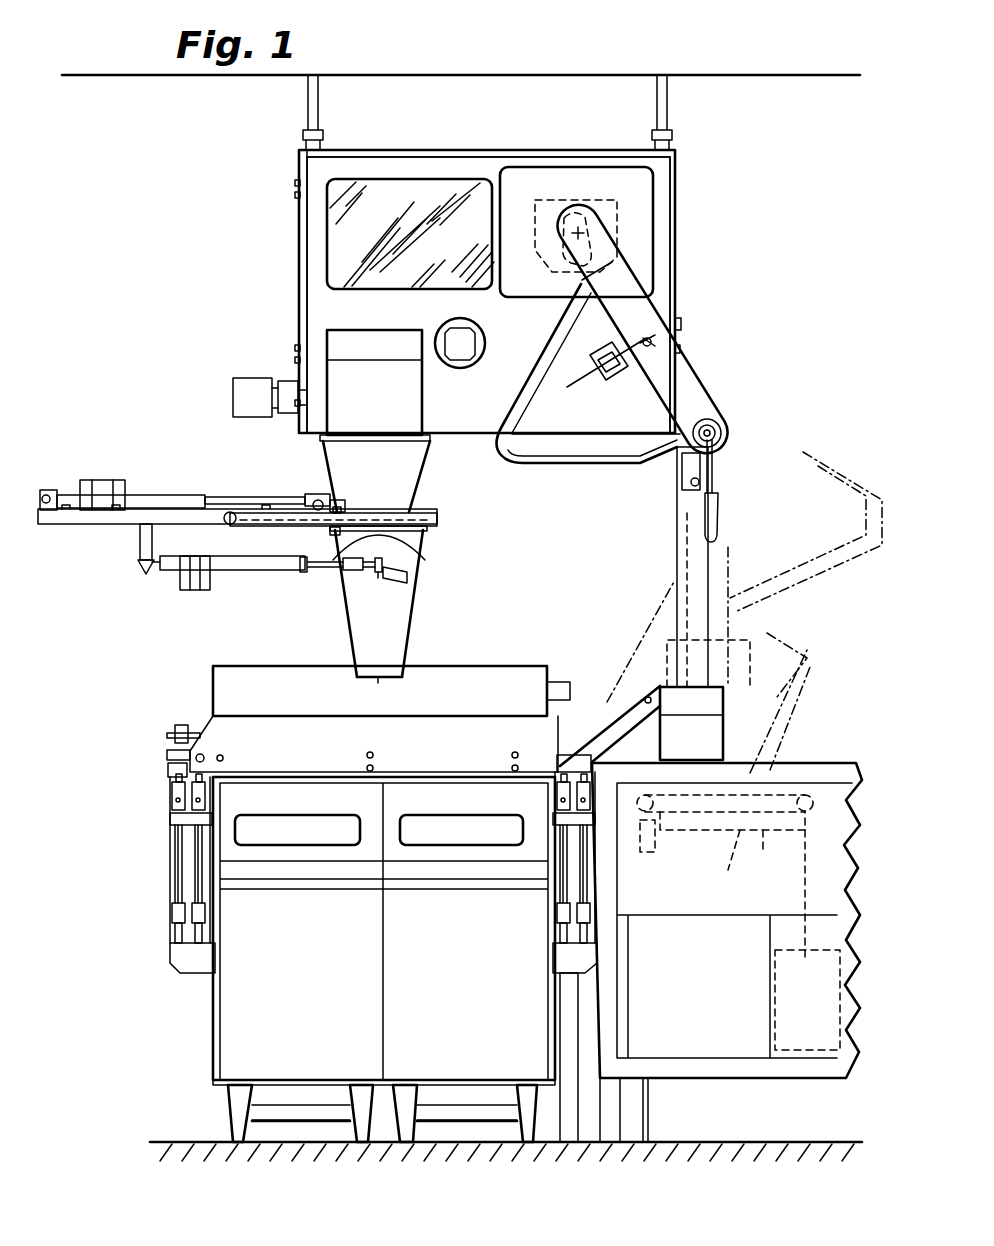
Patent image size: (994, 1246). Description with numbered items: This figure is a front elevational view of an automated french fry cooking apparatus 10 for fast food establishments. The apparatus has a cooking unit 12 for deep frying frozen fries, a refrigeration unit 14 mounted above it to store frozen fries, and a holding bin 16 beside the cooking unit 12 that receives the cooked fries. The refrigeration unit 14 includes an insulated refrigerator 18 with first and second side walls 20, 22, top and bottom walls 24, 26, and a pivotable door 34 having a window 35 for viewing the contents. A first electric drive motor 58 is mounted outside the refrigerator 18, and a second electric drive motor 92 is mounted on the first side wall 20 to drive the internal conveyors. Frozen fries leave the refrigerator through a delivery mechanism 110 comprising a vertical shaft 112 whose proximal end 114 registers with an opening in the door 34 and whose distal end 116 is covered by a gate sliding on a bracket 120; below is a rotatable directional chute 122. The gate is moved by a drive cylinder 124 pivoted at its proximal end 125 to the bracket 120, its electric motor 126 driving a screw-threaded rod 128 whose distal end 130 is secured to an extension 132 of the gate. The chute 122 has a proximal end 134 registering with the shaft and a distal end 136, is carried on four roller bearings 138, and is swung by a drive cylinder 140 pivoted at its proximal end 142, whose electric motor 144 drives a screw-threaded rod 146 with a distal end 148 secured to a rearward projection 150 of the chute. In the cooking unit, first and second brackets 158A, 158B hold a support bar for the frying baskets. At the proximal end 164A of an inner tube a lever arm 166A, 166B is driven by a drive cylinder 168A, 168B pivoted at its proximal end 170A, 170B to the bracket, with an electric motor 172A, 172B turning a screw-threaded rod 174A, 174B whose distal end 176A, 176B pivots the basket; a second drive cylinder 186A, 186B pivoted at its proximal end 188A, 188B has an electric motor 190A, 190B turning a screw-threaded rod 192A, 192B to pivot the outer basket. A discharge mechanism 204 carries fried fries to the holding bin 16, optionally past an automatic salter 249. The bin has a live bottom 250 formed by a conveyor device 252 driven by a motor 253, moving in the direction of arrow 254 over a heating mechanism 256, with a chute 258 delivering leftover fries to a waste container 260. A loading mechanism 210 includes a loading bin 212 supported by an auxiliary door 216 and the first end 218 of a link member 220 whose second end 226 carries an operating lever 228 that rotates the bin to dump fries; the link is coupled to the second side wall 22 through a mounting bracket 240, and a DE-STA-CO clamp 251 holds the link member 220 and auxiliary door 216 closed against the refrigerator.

The automated french fry cooking apparatus 10 is at (128, 375).
The cooking unit 12 is at (205, 715).
The refrigeration unit 14 is at (684, 212).
The holding bin 16 is at (838, 762).
The insulated refrigerator 18 is at (440, 165).
The first side wall 20 is at (298, 237).
The second side wall 22 is at (676, 228).
The top wall 24 is at (575, 160).
The bottom wall 26 is at (456, 436).
The pivotable door 34 is at (318, 300).
The window 35 is at (385, 190).
The first electric drive motor 58 is at (480, 340).
The second electric drive motor 92 is at (252, 382).
The delivery mechanism 110 is at (434, 540).
The vertical shaft 112 is at (330, 450).
The proximal end 114 is at (425, 395).
The distal end 116 is at (420, 525).
The bracket 120 is at (228, 522).
The rotatable directional chute 122 is at (415, 600).
The drive cylinder 124 is at (170, 497).
The proximal end 125 is at (50, 492).
The electric motor 126 is at (110, 482).
The screw-threaded rod 128 is at (235, 497).
The distal end 130 is at (318, 500).
The extension 132 is at (340, 505).
The proximal end 134 is at (440, 522).
The distal end 136 is at (400, 676).
The roller bearings 138 is at (320, 530).
The drive cylinder 140 is at (235, 570).
The proximal end 142 is at (150, 570).
The electric motor 144 is at (205, 585).
The screw-threaded rod 146 is at (320, 575).
The distal end 148 is at (378, 578).
The rearward projection 150 is at (407, 575).
The first bracket 158A is at (178, 805).
The second bracket 158B is at (565, 960).
The proximal end 164A is at (180, 728).
The lever arm 166A is at (190, 742).
The lever arm 166B is at (570, 775).
The drive cylinder 168A is at (178, 858).
The drive cylinder 168B is at (597, 890).
The proximal end 170A is at (178, 935).
The proximal end 170B is at (597, 935).
The electric motor 172A is at (178, 915).
The electric motor 172B is at (597, 915).
The screw-threaded rod 174A is at (178, 795).
The screw-threaded rod 174B is at (597, 800).
The distal end 176A is at (182, 765).
The distal end 176B is at (610, 740).
The drive cylinder 186A is at (240, 828).
The drive cylinder 186B is at (540, 838).
The proximal end 188A is at (205, 935).
The proximal end 188B is at (570, 935).
The electric motor 190A is at (205, 915).
The electric motor 190B is at (560, 910).
The screw-threaded rod 192A is at (200, 790).
The screw-threaded rod 192B is at (560, 790).
The discharge mechanism 204 is at (490, 715).
The loading mechanism 210 is at (705, 345).
The loading bin 212 is at (592, 197).
The auxiliary door 216 is at (530, 175).
The first end 218 is at (600, 212).
The link member 220 is at (690, 380).
The second end 226 is at (730, 438).
The operating lever 228 is at (718, 478).
The mounting bracket 240 is at (680, 318).
The automatic salter 249 is at (570, 692).
The live bottom 250 is at (795, 790).
The DE-STA-CO clamp 251 is at (605, 375).
The conveyor device 252 is at (760, 830).
The motor 253 is at (690, 852).
The arrow 254 is at (762, 784).
The heating mechanism 256 is at (730, 840).
The chute 258 is at (805, 900).
The waste container 260 is at (775, 1005).